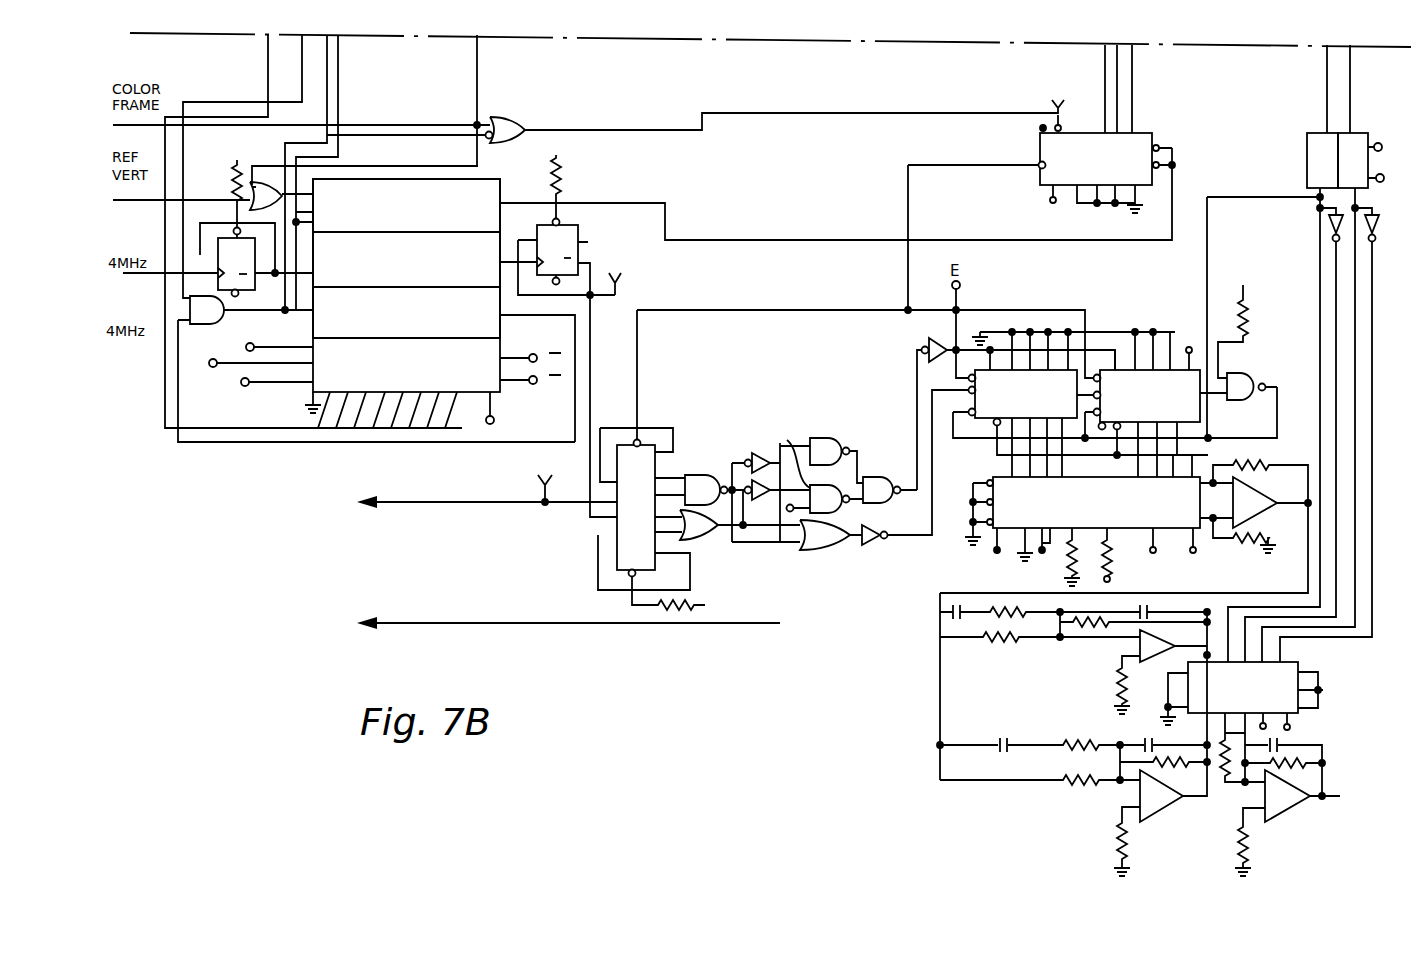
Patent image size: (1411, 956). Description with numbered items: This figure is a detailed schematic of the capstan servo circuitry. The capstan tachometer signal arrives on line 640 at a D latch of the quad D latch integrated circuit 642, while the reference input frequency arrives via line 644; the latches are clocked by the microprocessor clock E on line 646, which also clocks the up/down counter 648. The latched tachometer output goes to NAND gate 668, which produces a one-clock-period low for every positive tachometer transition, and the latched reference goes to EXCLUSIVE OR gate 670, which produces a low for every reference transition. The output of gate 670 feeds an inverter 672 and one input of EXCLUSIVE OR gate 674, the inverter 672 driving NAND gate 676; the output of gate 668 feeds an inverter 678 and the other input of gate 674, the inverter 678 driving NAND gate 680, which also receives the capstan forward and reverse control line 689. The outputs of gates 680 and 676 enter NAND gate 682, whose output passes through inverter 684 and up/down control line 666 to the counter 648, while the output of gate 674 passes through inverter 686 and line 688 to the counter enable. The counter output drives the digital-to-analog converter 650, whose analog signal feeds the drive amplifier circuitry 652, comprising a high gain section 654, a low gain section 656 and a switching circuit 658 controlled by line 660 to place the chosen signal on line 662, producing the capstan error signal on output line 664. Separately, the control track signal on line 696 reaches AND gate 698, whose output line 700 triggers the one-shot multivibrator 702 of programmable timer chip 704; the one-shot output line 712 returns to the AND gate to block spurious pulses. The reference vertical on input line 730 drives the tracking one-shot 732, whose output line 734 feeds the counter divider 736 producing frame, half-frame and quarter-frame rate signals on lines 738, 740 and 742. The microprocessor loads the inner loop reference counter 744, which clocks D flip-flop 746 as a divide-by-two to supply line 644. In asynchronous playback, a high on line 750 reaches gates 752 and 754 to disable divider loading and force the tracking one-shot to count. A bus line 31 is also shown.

The reference signal bus line 31 is at (268, 50).
The output line 696 is at (302, 75).
The output line 700 is at (328, 83).
The output line 750 is at (484, 65).
The gate 752 is at (522, 118).
The programmable timer chip 704 is at (483, 173).
The gate 754 is at (232, 168).
The input line 730 is at (148, 200).
The AND gate 698 is at (178, 322).
The output line 712 is at (232, 447).
The tracking one-shot 732 is at (440, 224).
The inner loop reference counter 744 is at (440, 278).
The one-shot multivibrator 702 is at (465, 324).
The D flip-flop 746 is at (580, 242).
The output line 734 is at (704, 245).
The line 644 is at (590, 308).
The line 646 is at (752, 290).
The quad D latch integrated circuit 642 is at (642, 438).
The line 640 is at (415, 507).
The capstan forward and reverse control line 689 is at (572, 628).
The NAND gate 668 is at (688, 478).
The inverter 678 is at (757, 452).
The NAND gate 676 is at (838, 428).
The NAND gate 680 is at (830, 428).
The NAND gate 682 is at (880, 472).
The EXCLUSIVE OR gate 670 is at (710, 540).
The inverter 672 is at (770, 497).
The EXCLUSIVE OR gate 674 is at (822, 548).
The inverter 686 is at (870, 545).
The line 688 is at (928, 535).
The inverter 684 is at (930, 340).
The up/down control line 666 is at (958, 345).
The up/down counter 648 is at (1114, 326).
The counter divider 736 is at (1040, 182).
The line 742 is at (1105, 65).
The line 740 is at (1117, 85).
The line 738 is at (1132, 112).
The line 660 is at (1353, 250).
The digital-to-analog converter 650 is at (1167, 528).
The high gain section 654 is at (1096, 647).
The drive amplifier circuitry 652 is at (1037, 795).
The low gain section 656 is at (1082, 733).
The switching circuit 658 is at (1300, 657).
The line 662 is at (1225, 745).
The output line 664 is at (1333, 800).